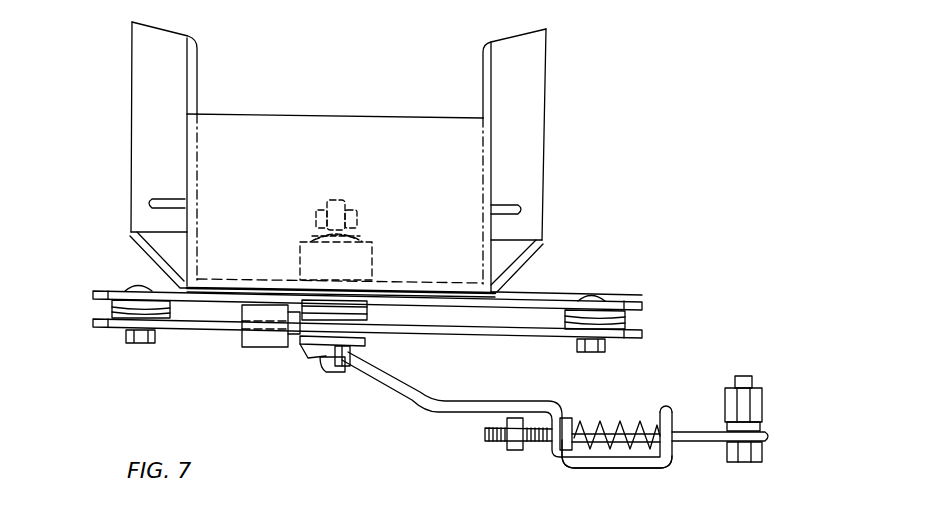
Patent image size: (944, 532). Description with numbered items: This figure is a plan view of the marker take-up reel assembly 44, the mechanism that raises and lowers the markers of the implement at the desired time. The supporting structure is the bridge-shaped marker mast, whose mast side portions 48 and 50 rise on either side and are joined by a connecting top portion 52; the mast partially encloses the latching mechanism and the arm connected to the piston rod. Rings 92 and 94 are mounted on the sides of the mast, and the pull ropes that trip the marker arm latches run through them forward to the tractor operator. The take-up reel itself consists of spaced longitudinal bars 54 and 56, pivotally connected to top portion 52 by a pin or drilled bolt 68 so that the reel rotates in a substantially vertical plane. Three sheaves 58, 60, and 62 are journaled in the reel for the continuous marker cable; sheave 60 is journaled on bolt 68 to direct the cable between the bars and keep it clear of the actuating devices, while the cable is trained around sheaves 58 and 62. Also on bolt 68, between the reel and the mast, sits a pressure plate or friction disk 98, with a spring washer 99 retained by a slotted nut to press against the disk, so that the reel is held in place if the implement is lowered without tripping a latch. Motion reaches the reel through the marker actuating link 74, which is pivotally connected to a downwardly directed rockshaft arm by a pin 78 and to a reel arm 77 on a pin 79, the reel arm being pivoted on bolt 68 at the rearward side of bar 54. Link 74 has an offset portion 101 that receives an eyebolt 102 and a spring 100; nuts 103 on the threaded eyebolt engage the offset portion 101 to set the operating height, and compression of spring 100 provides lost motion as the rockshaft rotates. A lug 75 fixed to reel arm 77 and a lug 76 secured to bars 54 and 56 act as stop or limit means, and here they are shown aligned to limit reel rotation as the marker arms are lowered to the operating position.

The marker take-up reel assembly 44 is at (611, 285).
The mast side portion 48 is at (540, 130).
The mast side portion 50 is at (131, 123).
The connecting top portion 52 is at (268, 153).
The longitudinal bar 54 is at (518, 340).
The longitudinal bar 56 is at (541, 300).
The sheave 58 is at (620, 320).
The sheave 60 is at (112, 308).
The sheave 62 is at (366, 312).
The pin or drilled bolt 68 is at (338, 200).
The marker actuating link 74 is at (552, 396).
The lug 75 is at (347, 366).
The lug 76 is at (249, 349).
The reel arm 77 is at (304, 346).
The pin 78 is at (745, 376).
The pin 79 is at (331, 373).
The ring 92 is at (520, 212).
The ring 94 is at (151, 204).
The pressure plate or friction disk 98 is at (403, 292).
The spring washer 99 is at (363, 234).
The spring 100 is at (625, 420).
The offset portion 101 is at (597, 469).
The eyebolt 102 is at (692, 442).
The nuts 103 is at (567, 418).